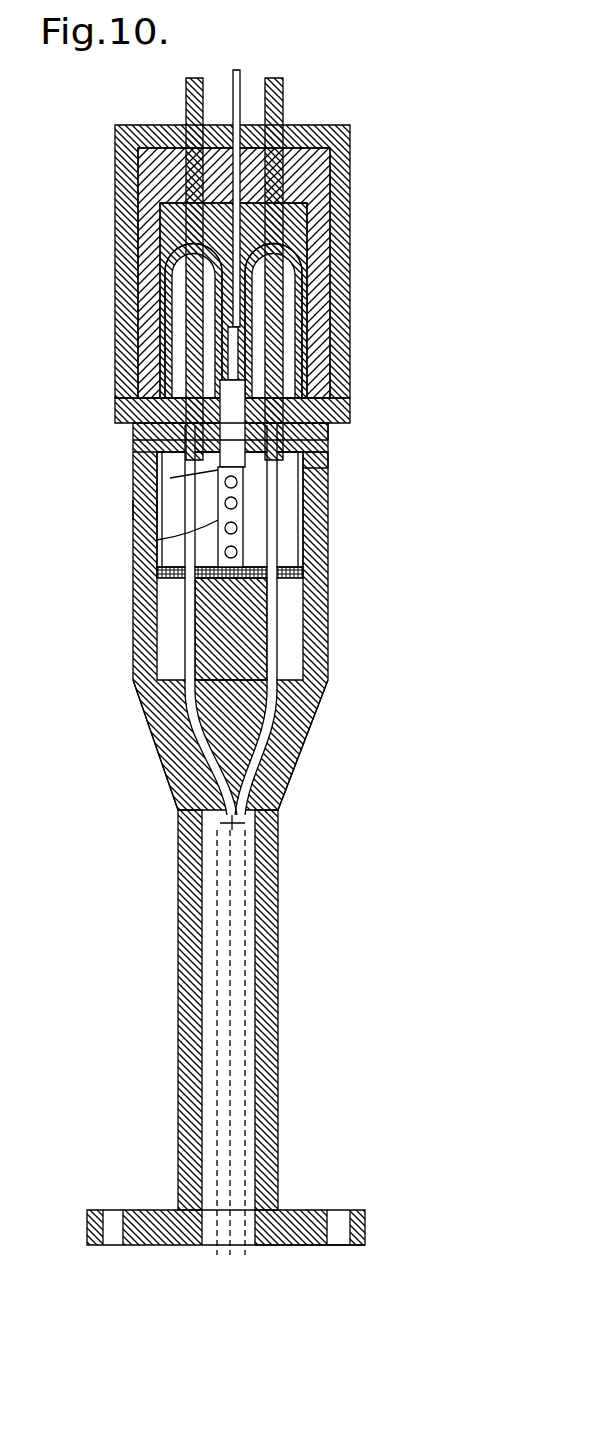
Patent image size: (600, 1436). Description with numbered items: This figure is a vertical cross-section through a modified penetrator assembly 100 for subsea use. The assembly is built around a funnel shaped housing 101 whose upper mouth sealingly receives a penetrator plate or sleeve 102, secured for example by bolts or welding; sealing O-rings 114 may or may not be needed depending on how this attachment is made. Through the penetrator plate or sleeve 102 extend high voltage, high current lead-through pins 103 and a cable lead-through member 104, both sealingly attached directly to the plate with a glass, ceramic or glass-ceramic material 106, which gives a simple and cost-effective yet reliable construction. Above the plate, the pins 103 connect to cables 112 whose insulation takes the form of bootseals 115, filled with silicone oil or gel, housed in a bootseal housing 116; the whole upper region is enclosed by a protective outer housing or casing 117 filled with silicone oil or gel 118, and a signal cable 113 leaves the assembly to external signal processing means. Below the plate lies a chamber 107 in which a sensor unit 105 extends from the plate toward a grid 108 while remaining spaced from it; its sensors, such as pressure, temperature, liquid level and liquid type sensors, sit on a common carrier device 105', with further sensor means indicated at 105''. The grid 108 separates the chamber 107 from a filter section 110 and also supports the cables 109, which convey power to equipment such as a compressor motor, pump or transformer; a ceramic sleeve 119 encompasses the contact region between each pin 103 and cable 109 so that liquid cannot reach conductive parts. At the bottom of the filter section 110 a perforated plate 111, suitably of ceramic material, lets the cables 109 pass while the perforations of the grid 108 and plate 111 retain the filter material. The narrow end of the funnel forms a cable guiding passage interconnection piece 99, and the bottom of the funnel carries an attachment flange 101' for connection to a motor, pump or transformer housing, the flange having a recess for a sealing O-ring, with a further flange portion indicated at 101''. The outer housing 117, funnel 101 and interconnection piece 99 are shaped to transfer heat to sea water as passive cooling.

The cable guiding passage interconnection piece 99 is at (180, 990).
The nozzle assembly 100 is at (412, 244).
The funnel shaped housing 101 is at (191, 745).
The attachment flange 101' is at (216, 1194).
The base flange 101'' is at (323, 1264).
The penetrator plate or sleeve 102 is at (133, 452).
The lead-through pins 103 is at (130, 430).
The cable lead-through member 104 is at (330, 457).
The sensor unit 105 is at (135, 539).
The common carrier device 105' is at (303, 517).
The connector 105'' is at (146, 483).
The glass, ceramic or glass-ceramic material 106 is at (115, 408).
The chamber 107 is at (330, 483).
The grid 108 is at (157, 568).
The cables 109 is at (185, 640).
The filter section 110 is at (135, 605).
The perforated plate 111 is at (278, 808).
The cables 112 is at (283, 92).
The signal cables 113 is at (240, 92).
The sealing O-rings 114 is at (350, 412).
The bootseals 115 is at (120, 312).
The bootseal housing 116 is at (138, 240).
The protective outer housing or casing 117 is at (118, 355).
The silicone oil or gel 118 is at (350, 180).
The ceramic sleeve 119 is at (133, 510).